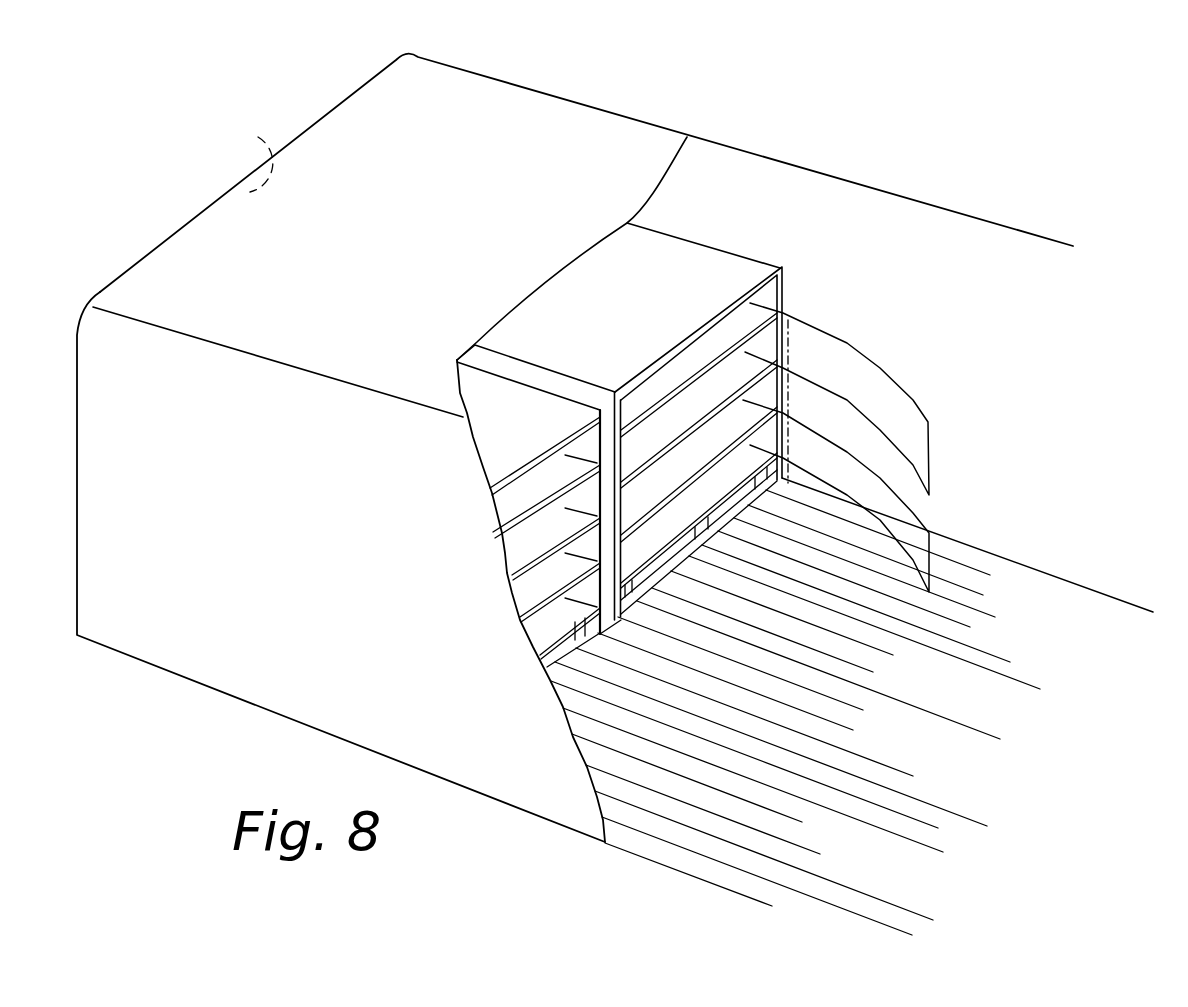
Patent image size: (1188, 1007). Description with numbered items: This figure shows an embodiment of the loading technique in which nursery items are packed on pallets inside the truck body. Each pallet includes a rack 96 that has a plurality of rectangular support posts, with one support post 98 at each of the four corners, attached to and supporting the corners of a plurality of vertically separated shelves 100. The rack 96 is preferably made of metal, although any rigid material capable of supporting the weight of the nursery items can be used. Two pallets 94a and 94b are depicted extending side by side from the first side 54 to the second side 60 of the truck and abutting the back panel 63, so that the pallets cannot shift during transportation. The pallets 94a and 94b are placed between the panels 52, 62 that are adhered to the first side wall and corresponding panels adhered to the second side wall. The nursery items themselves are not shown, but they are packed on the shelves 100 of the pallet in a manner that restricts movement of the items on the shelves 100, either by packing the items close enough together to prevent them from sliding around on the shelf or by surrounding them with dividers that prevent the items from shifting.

The panel 52 is at (860, 373).
The first side 54 is at (740, 165).
The second side 60 is at (510, 548).
The panel 62 is at (917, 530).
The back panel 63 is at (266, 148).
The pallet 94a is at (639, 415).
The pallet 94b is at (480, 506).
The rack 96 is at (505, 478).
The support post 98 is at (598, 434).
The shelves 100 is at (523, 497).